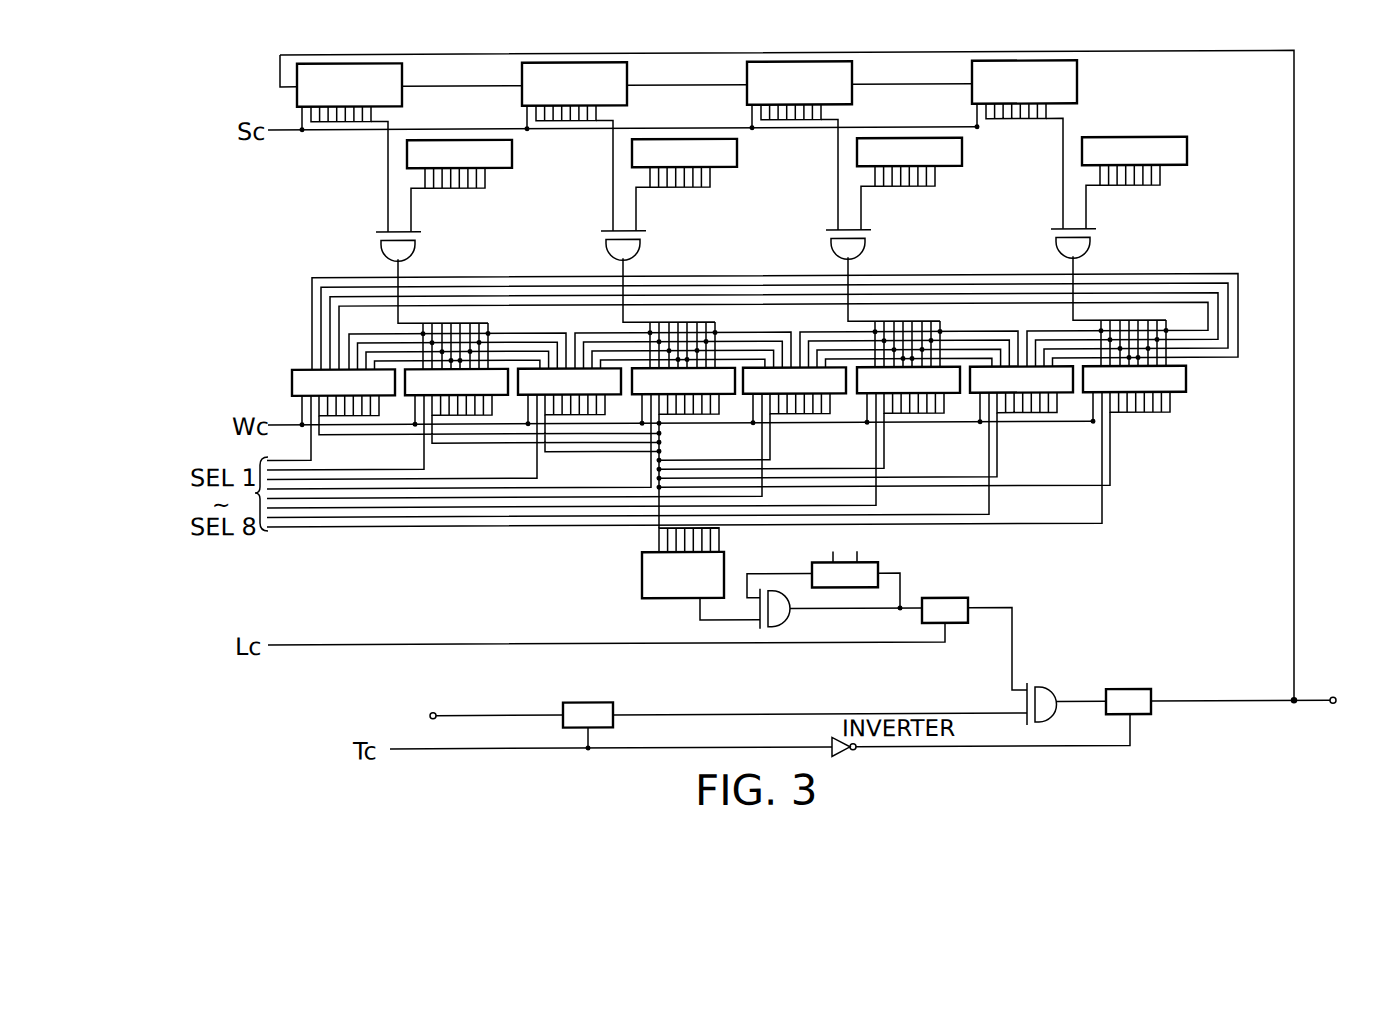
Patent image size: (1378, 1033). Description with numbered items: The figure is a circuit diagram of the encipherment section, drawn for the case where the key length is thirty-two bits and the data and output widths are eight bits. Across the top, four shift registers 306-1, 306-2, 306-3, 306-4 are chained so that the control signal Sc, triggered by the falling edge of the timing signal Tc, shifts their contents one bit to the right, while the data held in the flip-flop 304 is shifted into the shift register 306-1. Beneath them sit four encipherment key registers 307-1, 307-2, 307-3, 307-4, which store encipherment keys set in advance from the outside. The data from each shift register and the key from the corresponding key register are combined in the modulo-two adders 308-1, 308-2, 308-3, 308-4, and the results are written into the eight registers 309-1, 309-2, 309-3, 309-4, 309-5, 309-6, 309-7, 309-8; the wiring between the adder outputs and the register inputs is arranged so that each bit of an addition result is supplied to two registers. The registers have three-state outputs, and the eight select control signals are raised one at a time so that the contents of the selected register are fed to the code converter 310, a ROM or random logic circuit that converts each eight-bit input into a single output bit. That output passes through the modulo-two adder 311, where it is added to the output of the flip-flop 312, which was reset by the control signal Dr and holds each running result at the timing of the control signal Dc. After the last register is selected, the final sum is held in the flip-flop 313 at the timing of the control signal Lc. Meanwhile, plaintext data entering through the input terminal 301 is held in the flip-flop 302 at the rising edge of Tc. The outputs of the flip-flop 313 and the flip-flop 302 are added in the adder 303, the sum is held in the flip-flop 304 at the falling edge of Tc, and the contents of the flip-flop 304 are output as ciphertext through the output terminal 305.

The input terminal 301 is at (433, 711).
The flip-flop 302 is at (613, 703).
The adder 303 is at (1042, 684).
The flip-flop 304 is at (1151, 690).
The output terminal 305 is at (1336, 697).
The shift register 306-1 is at (409, 62).
The shift register 306-2 is at (634, 62).
The shift register 306-3 is at (859, 62).
The shift register 306-4 is at (1084, 62).
The encipherment key register 307-1 is at (512, 154).
The encipherment key register 307-2 is at (737, 154).
The encipherment key register 307-3 is at (962, 154).
The encipherment key register 307-4 is at (1187, 154).
The modulo-2 adder 308-1 is at (418, 245).
The modulo-2 adder 308-2 is at (643, 245).
The modulo-2 adder 308-3 is at (868, 245).
The modulo-2 adder 308-4 is at (1093, 245).
The register 309-1 is at (392, 395).
The register 309-2 is at (505, 395).
The register 309-3 is at (618, 395).
The register 309-4 is at (732, 395).
The register 309-5 is at (843, 395).
The register 309-6 is at (957, 395).
The register 309-7 is at (1070, 395).
The register 309-8 is at (1183, 395).
The code converter 310 is at (640, 585).
The modulo-2 adder 311 is at (770, 590).
The flip-flop 312 is at (878, 564).
The flip-flop 313 is at (968, 599).